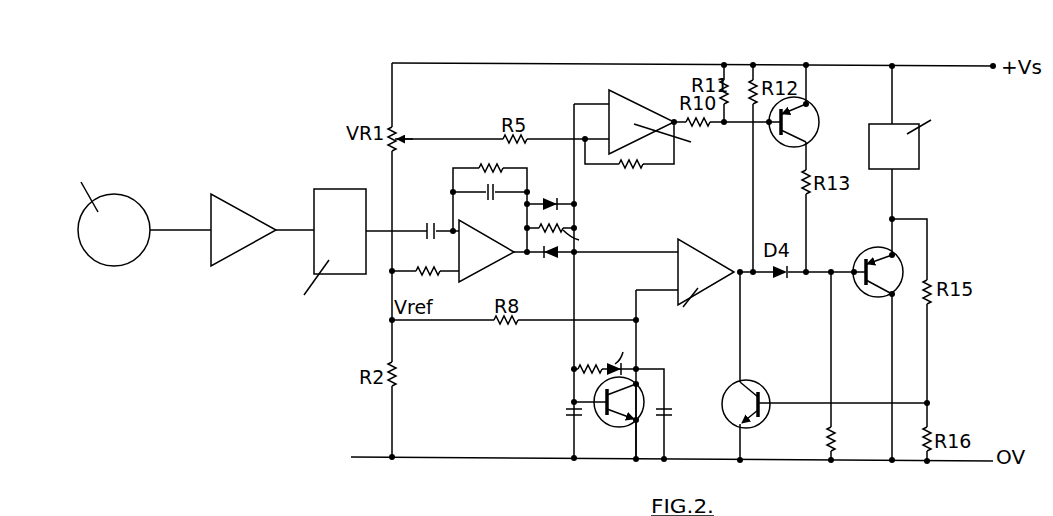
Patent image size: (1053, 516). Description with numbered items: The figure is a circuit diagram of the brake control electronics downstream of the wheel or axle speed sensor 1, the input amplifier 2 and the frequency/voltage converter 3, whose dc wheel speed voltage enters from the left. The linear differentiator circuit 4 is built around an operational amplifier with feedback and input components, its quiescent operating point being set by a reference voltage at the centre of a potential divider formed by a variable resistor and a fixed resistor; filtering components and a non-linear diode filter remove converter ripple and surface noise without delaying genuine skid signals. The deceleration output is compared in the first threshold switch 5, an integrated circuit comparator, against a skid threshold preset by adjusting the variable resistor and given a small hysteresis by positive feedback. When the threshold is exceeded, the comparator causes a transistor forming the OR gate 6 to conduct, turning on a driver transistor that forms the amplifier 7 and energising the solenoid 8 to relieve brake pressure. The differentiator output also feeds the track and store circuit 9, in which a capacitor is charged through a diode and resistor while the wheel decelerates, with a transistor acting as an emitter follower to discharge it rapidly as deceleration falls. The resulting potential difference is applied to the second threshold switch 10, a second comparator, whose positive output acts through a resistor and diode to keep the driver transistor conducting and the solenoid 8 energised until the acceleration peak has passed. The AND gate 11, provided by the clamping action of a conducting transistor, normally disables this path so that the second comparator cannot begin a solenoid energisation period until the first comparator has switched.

The wheel or axle speed sensor 1 is at (121, 240).
The input amplifier 2 is at (243, 240).
The frequency/voltage converter 3 is at (346, 240).
The linear differentiator circuit 4 is at (456, 154).
The first threshold switch 5 is at (629, 84).
The OR gate 6 is at (817, 89).
The amplifier 7 is at (906, 257).
The solenoid 8 is at (924, 148).
The track and store circuit 9 is at (603, 462).
The second threshold switch 10 is at (704, 250).
The AND gate 11 is at (758, 466).